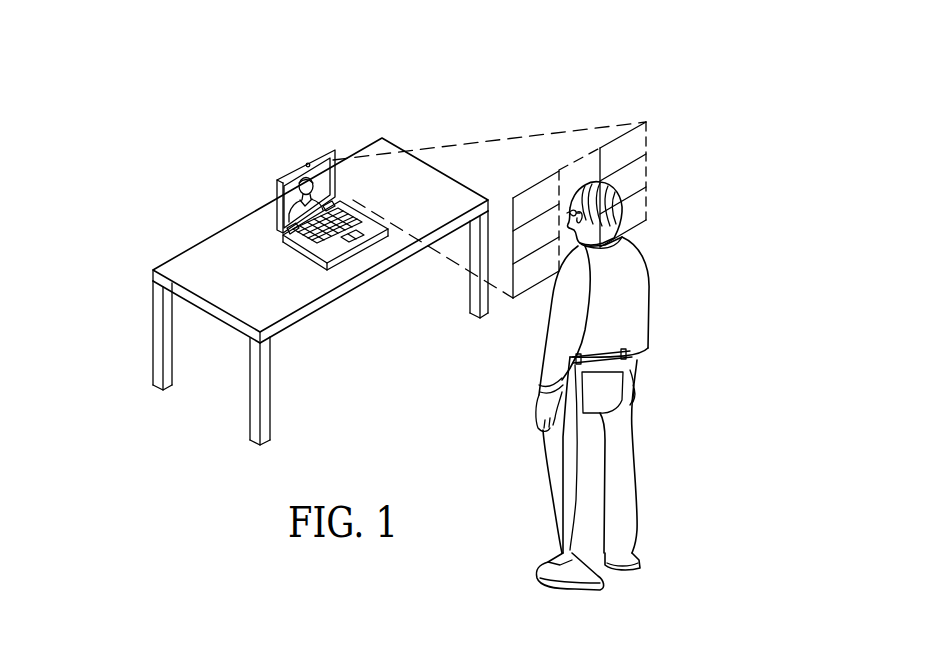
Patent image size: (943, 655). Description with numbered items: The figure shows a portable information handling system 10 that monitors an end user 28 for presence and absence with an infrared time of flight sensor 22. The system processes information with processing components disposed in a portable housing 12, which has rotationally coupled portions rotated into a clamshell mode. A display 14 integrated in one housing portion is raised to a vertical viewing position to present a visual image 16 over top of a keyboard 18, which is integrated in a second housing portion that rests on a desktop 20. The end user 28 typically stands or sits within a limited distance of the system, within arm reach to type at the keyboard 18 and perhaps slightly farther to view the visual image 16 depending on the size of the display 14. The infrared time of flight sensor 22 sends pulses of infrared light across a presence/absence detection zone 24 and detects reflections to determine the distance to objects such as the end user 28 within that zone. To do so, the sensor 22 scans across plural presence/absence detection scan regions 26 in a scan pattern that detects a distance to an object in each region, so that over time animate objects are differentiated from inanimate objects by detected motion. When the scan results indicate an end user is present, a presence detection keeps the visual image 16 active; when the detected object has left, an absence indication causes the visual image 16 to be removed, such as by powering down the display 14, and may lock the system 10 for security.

The portable information handling system 10 is at (242, 223).
The portable housing 12 is at (312, 263).
The display 14 is at (327, 174).
The visual image 16 is at (294, 190).
The keyboard 18 is at (338, 250).
The desktop 20 is at (183, 271).
The infrared time of flight sensor 22 is at (325, 88).
The presence/absence detection zone 24 is at (645, 208).
The presence/absence detection scan regions 26 is at (712, 148).
The end user 28 is at (631, 438).